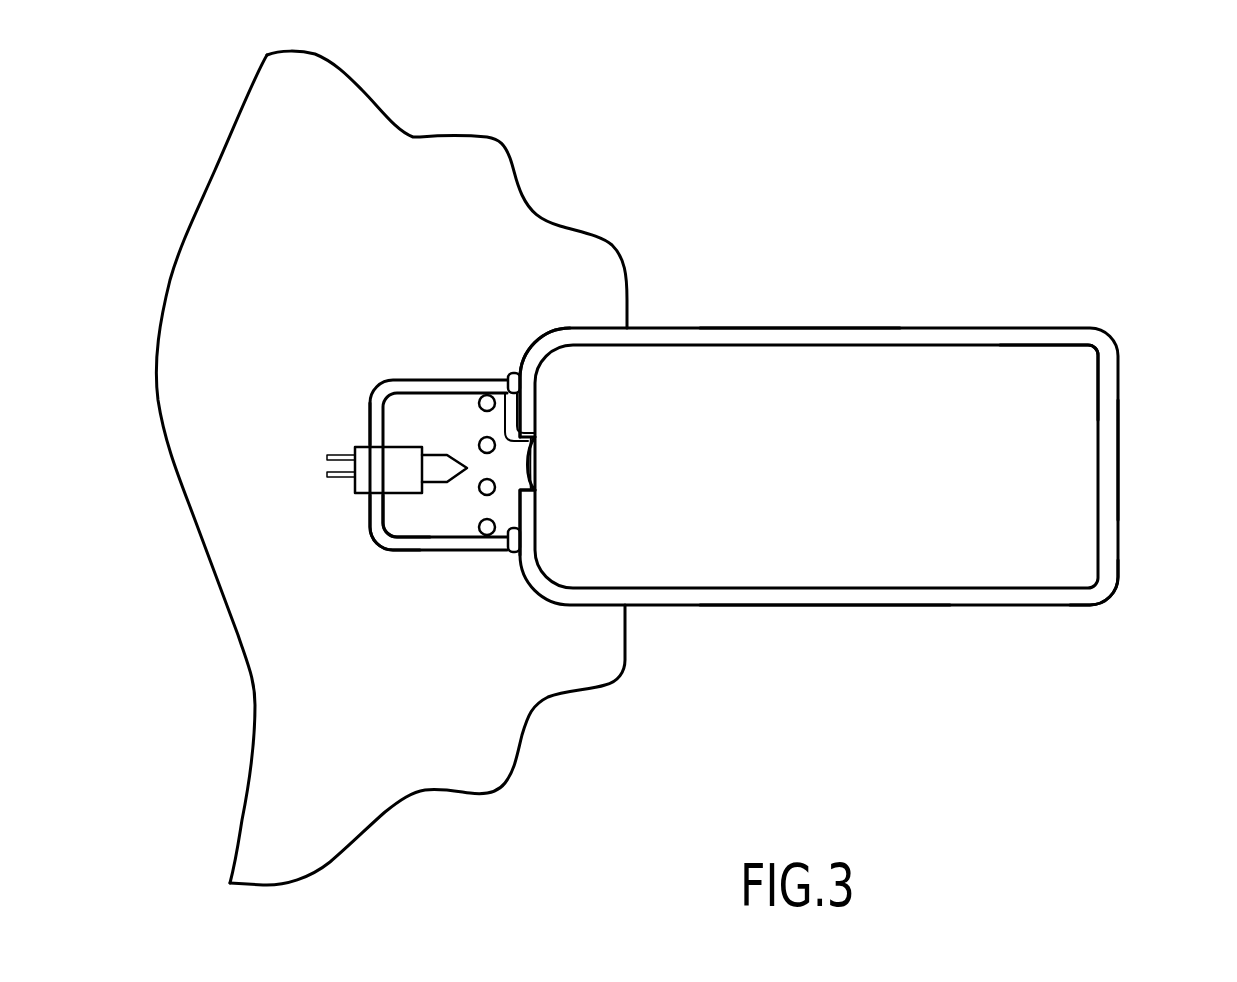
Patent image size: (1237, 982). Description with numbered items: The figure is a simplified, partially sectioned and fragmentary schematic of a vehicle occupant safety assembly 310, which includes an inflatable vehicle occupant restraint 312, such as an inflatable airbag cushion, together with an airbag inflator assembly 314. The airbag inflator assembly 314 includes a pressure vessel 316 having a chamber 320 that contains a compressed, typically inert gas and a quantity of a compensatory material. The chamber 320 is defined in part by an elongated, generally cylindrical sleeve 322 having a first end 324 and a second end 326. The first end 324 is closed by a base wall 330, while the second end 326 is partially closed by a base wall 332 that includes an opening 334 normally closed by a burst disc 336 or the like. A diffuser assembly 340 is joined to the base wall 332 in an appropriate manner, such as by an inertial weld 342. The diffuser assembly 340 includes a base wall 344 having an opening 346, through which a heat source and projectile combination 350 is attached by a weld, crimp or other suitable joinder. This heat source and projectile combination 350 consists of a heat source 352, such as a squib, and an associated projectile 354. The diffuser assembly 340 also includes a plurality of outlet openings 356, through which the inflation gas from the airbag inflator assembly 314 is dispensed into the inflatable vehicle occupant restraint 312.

The vehicle occupant safety assembly 310 is at (897, 247).
The inflatable vehicle occupant restraint 312 is at (493, 137).
The airbag inflator assembly 314 is at (990, 327).
The pressure vessel 316 is at (817, 607).
The chamber 320 is at (1072, 363).
The sleeve 322 is at (792, 327).
The first end 324 is at (1103, 613).
The second end 326 is at (540, 310).
The base wall 330 is at (1118, 450).
The base wall 332 is at (537, 527).
The opening 334 is at (513, 373).
The burst disc 336 is at (533, 467).
The diffuser assembly 340 is at (373, 376).
The inertial weld 342 is at (513, 557).
The base wall 344 is at (373, 407).
The opening 346 is at (373, 507).
The heat source and projectile combination 350 is at (400, 505).
The heat source 352 is at (363, 473).
The projectile 354 is at (437, 458).
The outlet openings 356 is at (480, 490).